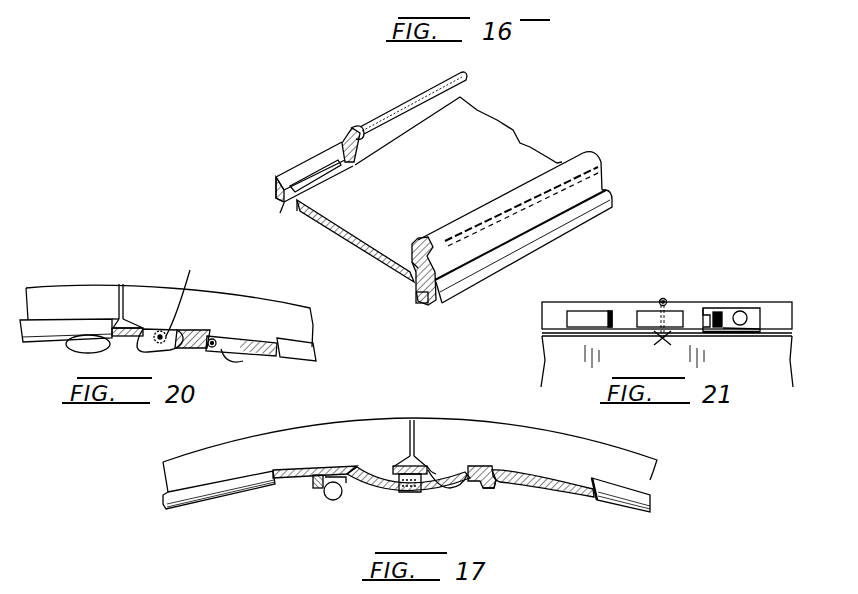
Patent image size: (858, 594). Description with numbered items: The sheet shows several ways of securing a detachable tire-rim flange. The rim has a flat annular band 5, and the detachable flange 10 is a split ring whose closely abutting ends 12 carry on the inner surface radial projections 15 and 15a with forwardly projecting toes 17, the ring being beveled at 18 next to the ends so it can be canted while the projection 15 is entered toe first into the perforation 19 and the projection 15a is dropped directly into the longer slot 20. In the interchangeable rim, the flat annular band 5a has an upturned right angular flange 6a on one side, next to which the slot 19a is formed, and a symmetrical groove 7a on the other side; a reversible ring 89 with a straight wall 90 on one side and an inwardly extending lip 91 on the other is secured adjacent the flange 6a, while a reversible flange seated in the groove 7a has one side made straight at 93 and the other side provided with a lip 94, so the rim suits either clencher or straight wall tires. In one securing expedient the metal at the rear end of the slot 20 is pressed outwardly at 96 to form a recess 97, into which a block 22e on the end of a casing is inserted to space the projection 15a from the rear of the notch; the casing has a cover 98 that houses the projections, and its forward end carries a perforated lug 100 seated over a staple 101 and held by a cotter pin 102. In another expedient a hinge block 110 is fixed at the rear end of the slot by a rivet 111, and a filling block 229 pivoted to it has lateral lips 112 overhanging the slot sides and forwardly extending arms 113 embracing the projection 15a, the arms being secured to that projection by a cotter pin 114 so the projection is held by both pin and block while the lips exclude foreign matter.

In FIG. 16, the reversible ring 89 is at (350, 128).
In FIG. 16, the straight wall 90 is at (343, 141).
In FIG. 16, the inwardly extending lip 91 is at (361, 137).
In FIG. 16, the upturned right angular flange 6a is at (275, 188).
In FIG. 16, the flat annular band 5a is at (350, 258).
In FIG. 16, the slot 19a is at (289, 205).
In FIG. 16, the lip 94 is at (418, 253).
In FIG. 16, the straight side 93 is at (437, 256).
In FIG. 16, the perforation 19 is at (416, 292).
In FIG. 16, the toe 17 is at (421, 304).
In FIG. 17, the toe 17 is at (407, 495).
In FIG. 16, the symmetrical groove 7a is at (441, 304).
In FIG. 20, the detachable flange 10 is at (50, 295).
In FIG. 17, the detachable flange 10 is at (242, 450).
In FIG. 20, the ends of the ring 12 is at (121, 284).
In FIG. 17, the ends of the ring 12 is at (413, 420).
In FIG. 20, the forwardly extending arms 113 is at (189, 290).
In FIG. 21, the forwardly extending arms 113 is at (657, 312).
In FIG. 20, the cotter pin 114 is at (160, 331).
In FIG. 21, the cotter pin 114 is at (665, 298).
In FIG. 20, the block 229 is at (200, 324).
In FIG. 20, the rivet 111 is at (245, 340).
In FIG. 21, the rivet 111 is at (745, 312).
In FIG. 20, the radial projection 15 is at (75, 351).
In FIG. 21, the radial projection 15 is at (589, 314).
In FIG. 17, the radial projection 15 is at (375, 474).
In FIG. 20, the radial projection 15a is at (143, 347).
In FIG. 17, the radial projection 15a is at (448, 478).
In FIG. 20, the hinge block 110 is at (237, 358).
In FIG. 21, the hinge block 110 is at (736, 334).
In FIG. 21, the annular metallic band 5 is at (541, 357).
In FIG. 21, the lateral lips 112 is at (700, 312).
In FIG. 17, the beveled portion 18 is at (401, 465).
In FIG. 17, the slot 20 is at (432, 466).
In FIG. 17, the block 22e is at (484, 466).
In FIG. 17, the recess 97 is at (502, 468).
In FIG. 17, the outwardly pressed portion 96 is at (492, 488).
In FIG. 17, the cover 98 is at (427, 495).
In FIG. 17, the staple 101 is at (338, 494).
In FIG. 17, the perforated lug 100 is at (318, 488).
In FIG. 17, the cotter pin 102 is at (330, 500).